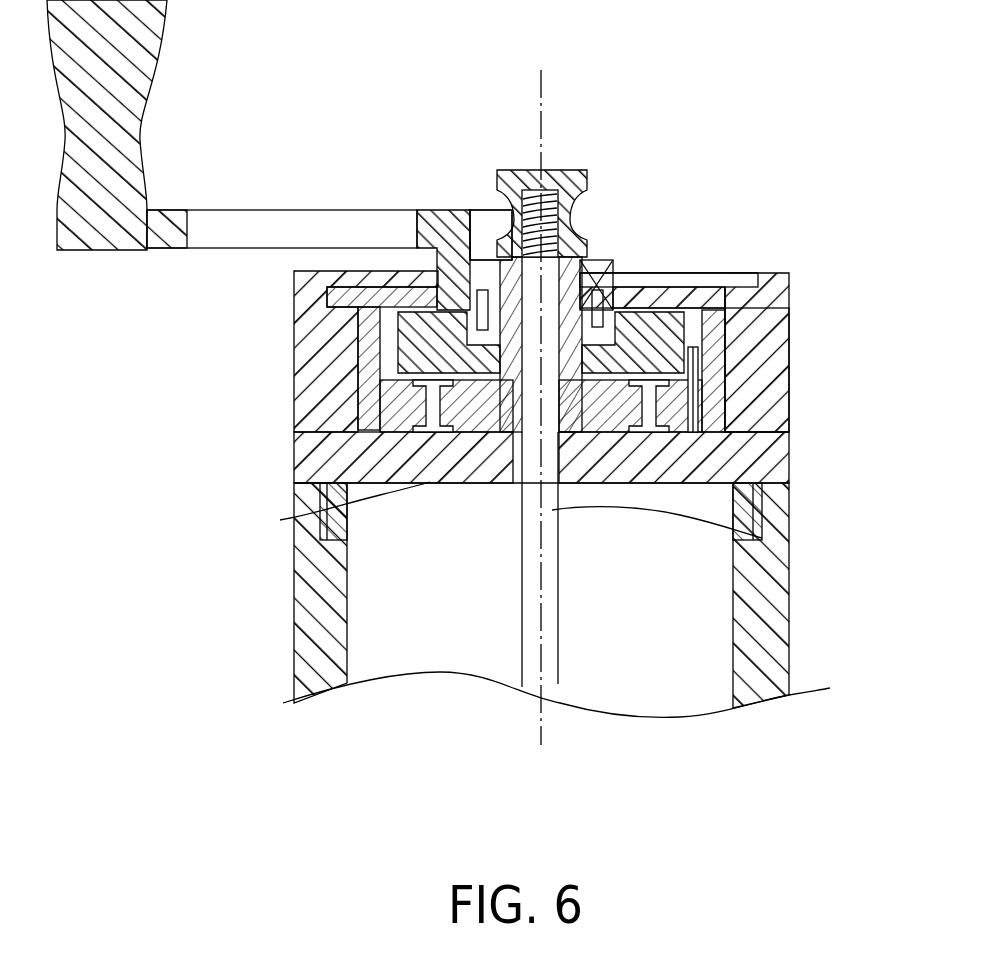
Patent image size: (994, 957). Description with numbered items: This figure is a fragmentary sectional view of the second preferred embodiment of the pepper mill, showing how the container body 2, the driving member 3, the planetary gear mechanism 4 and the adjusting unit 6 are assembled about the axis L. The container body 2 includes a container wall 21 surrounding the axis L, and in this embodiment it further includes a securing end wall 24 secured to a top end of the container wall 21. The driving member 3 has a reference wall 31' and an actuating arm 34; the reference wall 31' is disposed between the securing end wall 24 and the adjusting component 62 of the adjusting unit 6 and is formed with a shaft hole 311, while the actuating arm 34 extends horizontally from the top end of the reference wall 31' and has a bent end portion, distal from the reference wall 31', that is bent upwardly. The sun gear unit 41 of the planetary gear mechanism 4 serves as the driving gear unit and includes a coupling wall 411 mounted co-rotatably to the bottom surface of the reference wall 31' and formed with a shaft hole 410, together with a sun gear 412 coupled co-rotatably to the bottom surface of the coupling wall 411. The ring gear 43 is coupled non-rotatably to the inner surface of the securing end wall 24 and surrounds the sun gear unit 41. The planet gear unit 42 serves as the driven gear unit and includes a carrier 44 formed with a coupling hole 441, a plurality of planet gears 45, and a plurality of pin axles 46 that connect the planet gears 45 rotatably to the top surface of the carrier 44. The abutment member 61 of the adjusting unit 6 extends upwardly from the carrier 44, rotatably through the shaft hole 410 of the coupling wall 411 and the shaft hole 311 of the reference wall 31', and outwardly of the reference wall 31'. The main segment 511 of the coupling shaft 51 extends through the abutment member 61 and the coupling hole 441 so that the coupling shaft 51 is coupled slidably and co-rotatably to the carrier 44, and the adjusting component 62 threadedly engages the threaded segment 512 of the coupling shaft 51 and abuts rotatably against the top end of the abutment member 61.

The container body 2 is at (278, 588).
The driving member 3 is at (289, 190).
The planetary gear mechanism 4 is at (684, 266).
The adjusting unit 6 is at (498, 145).
The container wall 21 is at (320, 640).
The securing end wall 24 is at (318, 433).
The reference wall 31' is at (474, 204).
The actuating arm 34 is at (172, 235).
The sun gear unit 41 is at (658, 283).
The planet gear unit 42 is at (372, 385).
The ring gear 43 is at (718, 437).
The carrier 44 is at (393, 412).
The planet gears 45 is at (330, 500).
The pin axles 46 is at (427, 440).
The coupling shaft 51 is at (527, 563).
The abutment member 61 is at (485, 285).
The adjusting component 62 is at (565, 154).
The shaft hole 311 is at (613, 293).
The shaft hole 410 is at (620, 287).
The coupling wall 411 is at (697, 300).
The sun gear 412 is at (650, 352).
The coupling hole 441 is at (643, 433).
The main segment 511 is at (762, 538).
The threaded segment 512 is at (586, 265).
The axis L is at (545, 105).